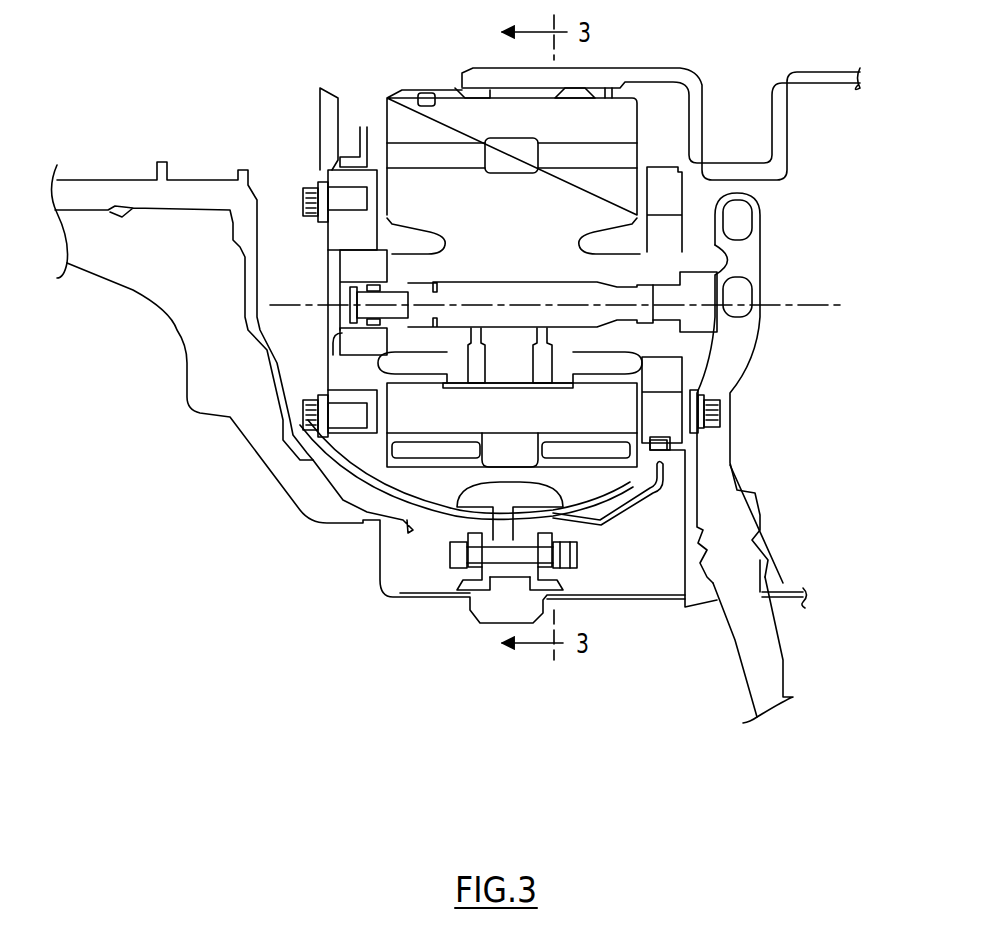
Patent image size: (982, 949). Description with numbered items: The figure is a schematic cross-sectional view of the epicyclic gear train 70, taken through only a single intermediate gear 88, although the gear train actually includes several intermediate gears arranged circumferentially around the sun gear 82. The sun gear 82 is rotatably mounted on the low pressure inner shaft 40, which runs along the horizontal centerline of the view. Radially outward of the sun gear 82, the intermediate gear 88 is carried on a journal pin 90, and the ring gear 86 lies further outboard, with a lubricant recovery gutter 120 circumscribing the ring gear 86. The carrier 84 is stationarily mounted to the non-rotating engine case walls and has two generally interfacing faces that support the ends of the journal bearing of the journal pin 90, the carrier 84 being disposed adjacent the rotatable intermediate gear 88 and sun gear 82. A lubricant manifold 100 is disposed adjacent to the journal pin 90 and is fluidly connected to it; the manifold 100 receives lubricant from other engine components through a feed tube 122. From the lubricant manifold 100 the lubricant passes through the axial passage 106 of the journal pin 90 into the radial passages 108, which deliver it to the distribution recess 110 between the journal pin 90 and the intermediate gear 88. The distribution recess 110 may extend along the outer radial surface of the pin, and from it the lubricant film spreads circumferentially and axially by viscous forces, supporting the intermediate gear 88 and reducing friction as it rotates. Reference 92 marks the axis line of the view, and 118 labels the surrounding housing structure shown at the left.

The inner shaft 40 is at (808, 80).
The epicyclic gear train 70 is at (330, 67).
The sun gear 82 is at (402, 110).
The carrier 84 is at (347, 182).
The ring gear 86 is at (585, 492).
The intermediate gear 88 is at (620, 204).
The journal pin 90 is at (393, 222).
The axis of rotation 92 is at (814, 306).
The lubricant manifold 100 is at (763, 277).
The axial passage 106 is at (424, 312).
The radial passages 108 is at (545, 376).
The distribution recess 110 is at (560, 389).
The housing 118 is at (227, 180).
The lubricant recovery gutter 120 is at (480, 608).
The feed tube 122 is at (783, 660).